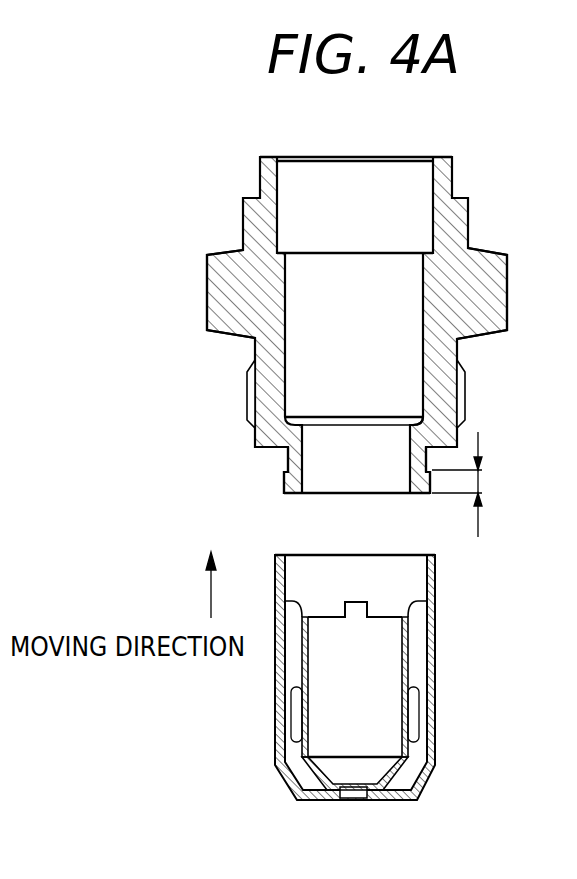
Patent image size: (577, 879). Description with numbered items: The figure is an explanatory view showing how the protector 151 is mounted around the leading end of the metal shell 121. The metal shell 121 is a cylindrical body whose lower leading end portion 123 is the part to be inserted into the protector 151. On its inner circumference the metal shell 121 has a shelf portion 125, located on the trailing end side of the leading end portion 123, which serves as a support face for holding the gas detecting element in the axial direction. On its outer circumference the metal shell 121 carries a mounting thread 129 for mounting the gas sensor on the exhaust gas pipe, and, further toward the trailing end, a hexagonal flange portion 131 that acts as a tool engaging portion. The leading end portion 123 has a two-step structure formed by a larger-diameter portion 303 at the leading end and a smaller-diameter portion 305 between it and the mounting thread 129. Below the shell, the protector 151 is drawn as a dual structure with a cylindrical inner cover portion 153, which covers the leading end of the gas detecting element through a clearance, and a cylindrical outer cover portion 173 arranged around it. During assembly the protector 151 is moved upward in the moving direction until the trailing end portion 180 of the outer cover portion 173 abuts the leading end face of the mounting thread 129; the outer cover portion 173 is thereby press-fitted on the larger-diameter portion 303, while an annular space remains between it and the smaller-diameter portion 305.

The metal shell 121 is at (213, 228).
The hexagonal flange portion 131 is at (215, 307).
The mounting thread 129 is at (250, 415).
The shelf portion 125 is at (411, 417).
The leading end portion 123 is at (268, 472).
The smaller-diameter portion 305 is at (288, 458).
The larger-diameter portion 303 is at (283, 488).
The trailing end portion 180 is at (435, 571).
The protector 151 is at (411, 692).
The outer cover portion 173 is at (436, 743).
The inner cover portion 153 is at (420, 773).